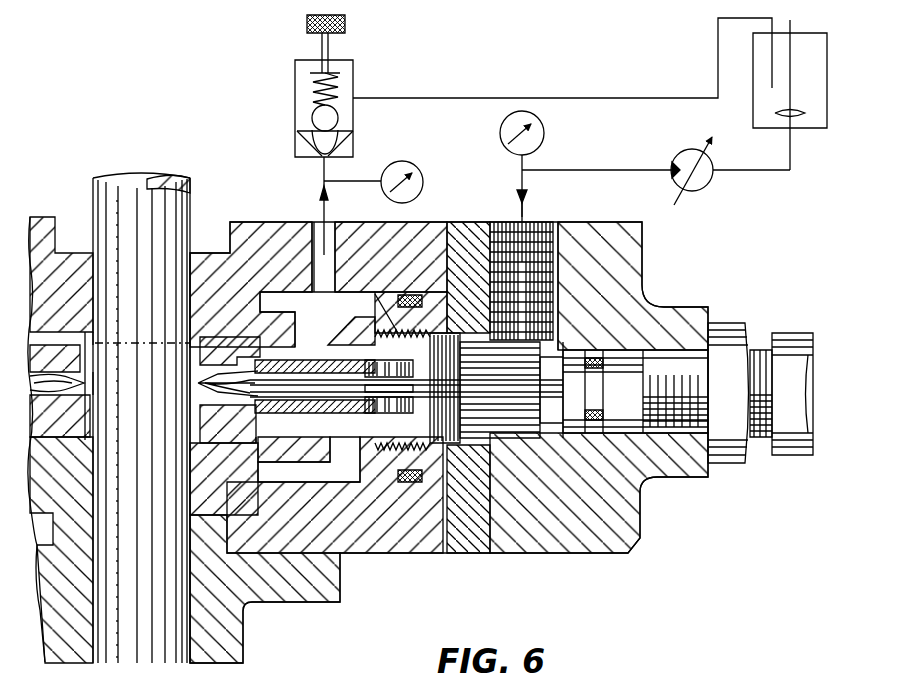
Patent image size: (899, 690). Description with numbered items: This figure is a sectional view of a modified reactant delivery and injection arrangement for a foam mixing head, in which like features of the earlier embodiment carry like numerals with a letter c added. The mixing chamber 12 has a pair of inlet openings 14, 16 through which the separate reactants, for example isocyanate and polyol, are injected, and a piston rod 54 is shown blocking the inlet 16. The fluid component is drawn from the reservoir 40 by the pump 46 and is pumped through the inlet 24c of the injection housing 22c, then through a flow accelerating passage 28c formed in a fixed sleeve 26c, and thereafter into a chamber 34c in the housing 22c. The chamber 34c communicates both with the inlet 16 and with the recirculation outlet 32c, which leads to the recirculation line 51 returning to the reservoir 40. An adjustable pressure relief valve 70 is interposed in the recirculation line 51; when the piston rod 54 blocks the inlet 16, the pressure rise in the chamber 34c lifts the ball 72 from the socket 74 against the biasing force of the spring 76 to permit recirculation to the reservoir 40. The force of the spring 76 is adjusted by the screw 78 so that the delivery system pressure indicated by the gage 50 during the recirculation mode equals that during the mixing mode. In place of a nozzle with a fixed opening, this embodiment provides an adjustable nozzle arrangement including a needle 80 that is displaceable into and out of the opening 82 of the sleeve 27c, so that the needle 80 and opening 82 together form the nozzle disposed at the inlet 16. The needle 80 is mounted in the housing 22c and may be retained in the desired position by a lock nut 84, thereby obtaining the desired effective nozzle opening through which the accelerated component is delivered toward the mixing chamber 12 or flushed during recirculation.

The mixing chamber 12 is at (155, 384).
The inlet opening 14 is at (88, 357).
The inlet opening 16 is at (195, 357).
The injection housing 22c is at (497, 556).
The inlet 24c is at (548, 228).
The fixed sleeve 26c is at (355, 452).
The sleeve 27c is at (257, 313).
The flow accelerating passage 28c is at (352, 410).
The recirculation outlet 32c is at (317, 226).
The chamber 34c is at (246, 402).
The reservoir 40 is at (812, 101).
The pump 46 is at (698, 190).
The gage 50 is at (545, 133).
The recirculation line 51 is at (522, 98).
The piston rod 54 is at (108, 282).
The adjustable pressure relief valve 70 is at (297, 100).
The ball 72 is at (339, 118).
The socket 74 is at (340, 150).
The spring 76 is at (312, 77).
The screw 78 is at (346, 24).
The needle 80 is at (224, 476).
The opening 82 is at (206, 374).
The lock nut 84 is at (750, 325).